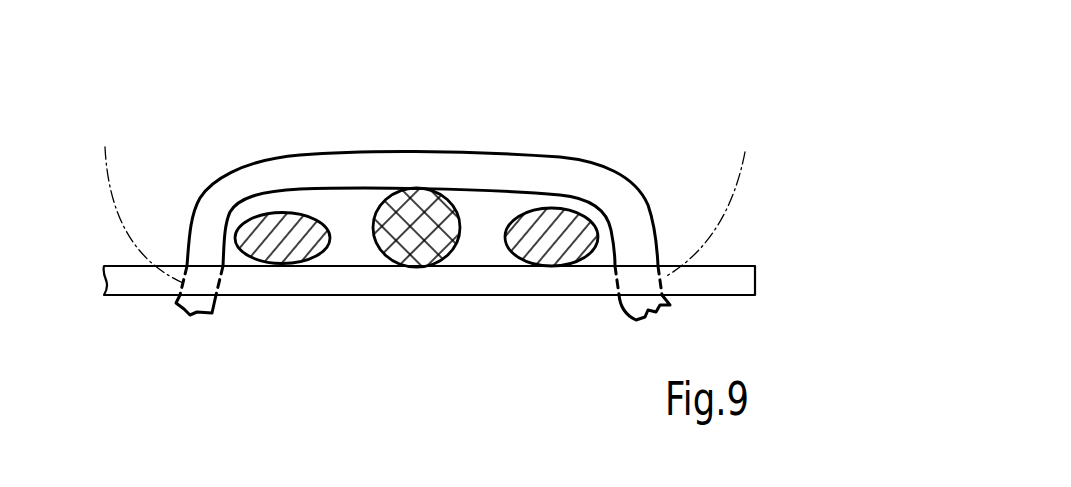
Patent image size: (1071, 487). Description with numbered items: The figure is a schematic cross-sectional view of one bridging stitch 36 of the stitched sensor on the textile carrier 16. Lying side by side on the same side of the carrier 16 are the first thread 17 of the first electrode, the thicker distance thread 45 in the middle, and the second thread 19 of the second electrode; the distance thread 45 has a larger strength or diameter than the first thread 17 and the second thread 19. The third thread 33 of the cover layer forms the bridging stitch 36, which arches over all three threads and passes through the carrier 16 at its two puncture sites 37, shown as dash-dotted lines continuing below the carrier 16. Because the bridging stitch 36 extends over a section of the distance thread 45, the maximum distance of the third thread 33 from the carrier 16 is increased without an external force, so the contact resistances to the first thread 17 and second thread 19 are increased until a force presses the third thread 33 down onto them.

The carrier 16 is at (743, 282).
The first thread 17 is at (290, 245).
The second thread 19 is at (553, 235).
The third thread 33 is at (443, 160).
The bridging stitch 36 is at (423, 162).
The puncture sites 37 is at (436, 201).
The distance thread 45 is at (420, 230).